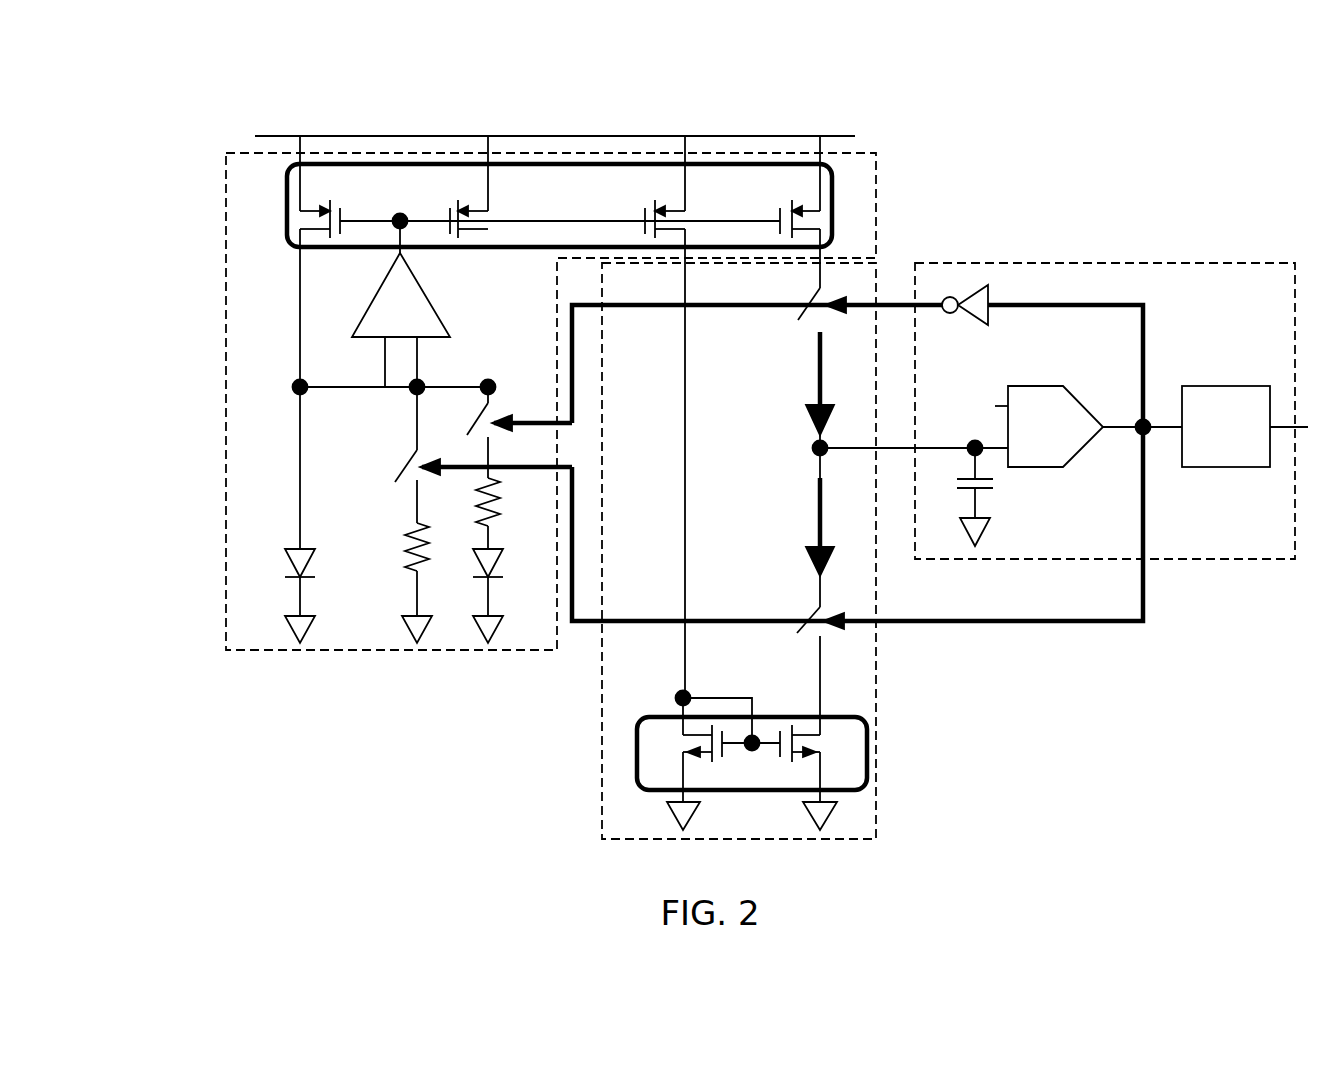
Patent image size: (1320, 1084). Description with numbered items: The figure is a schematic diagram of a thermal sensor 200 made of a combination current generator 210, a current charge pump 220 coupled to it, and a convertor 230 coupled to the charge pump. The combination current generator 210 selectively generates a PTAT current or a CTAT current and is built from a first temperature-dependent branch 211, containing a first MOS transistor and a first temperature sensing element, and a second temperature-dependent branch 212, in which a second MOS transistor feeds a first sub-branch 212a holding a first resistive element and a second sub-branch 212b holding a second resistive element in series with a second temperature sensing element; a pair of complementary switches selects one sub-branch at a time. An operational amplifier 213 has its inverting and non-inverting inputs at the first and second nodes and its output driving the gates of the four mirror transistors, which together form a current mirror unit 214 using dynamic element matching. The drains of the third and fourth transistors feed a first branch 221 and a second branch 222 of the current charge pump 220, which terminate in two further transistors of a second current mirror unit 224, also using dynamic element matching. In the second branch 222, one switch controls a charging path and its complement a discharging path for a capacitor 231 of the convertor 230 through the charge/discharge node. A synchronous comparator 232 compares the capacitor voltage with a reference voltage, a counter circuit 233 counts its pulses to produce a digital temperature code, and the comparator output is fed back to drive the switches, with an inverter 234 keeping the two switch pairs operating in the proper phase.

The thermal sensor 200 is at (166, 108).
The combination current generator 210 is at (515, 153).
The first temperature-dependent branch 211 is at (296, 521).
The second temperature-dependent branch 212 is at (338, 752).
The first sub-branch 212a is at (406, 593).
The second sub-branch 212b is at (477, 593).
The operational amplifier 213 is at (401, 320).
The current mirror unit 214 is at (287, 232).
The current charge pump 220 is at (876, 292).
The first branch 221 is at (683, 665).
The second branch 222 is at (822, 652).
The second current mirror unit 224 is at (868, 752).
The convertor 230 is at (1153, 263).
The capacitor 231 is at (997, 486).
The synchronous comparator 232 is at (1058, 426).
The counter circuit 233 is at (1245, 426).
The inverter 234 is at (966, 319).